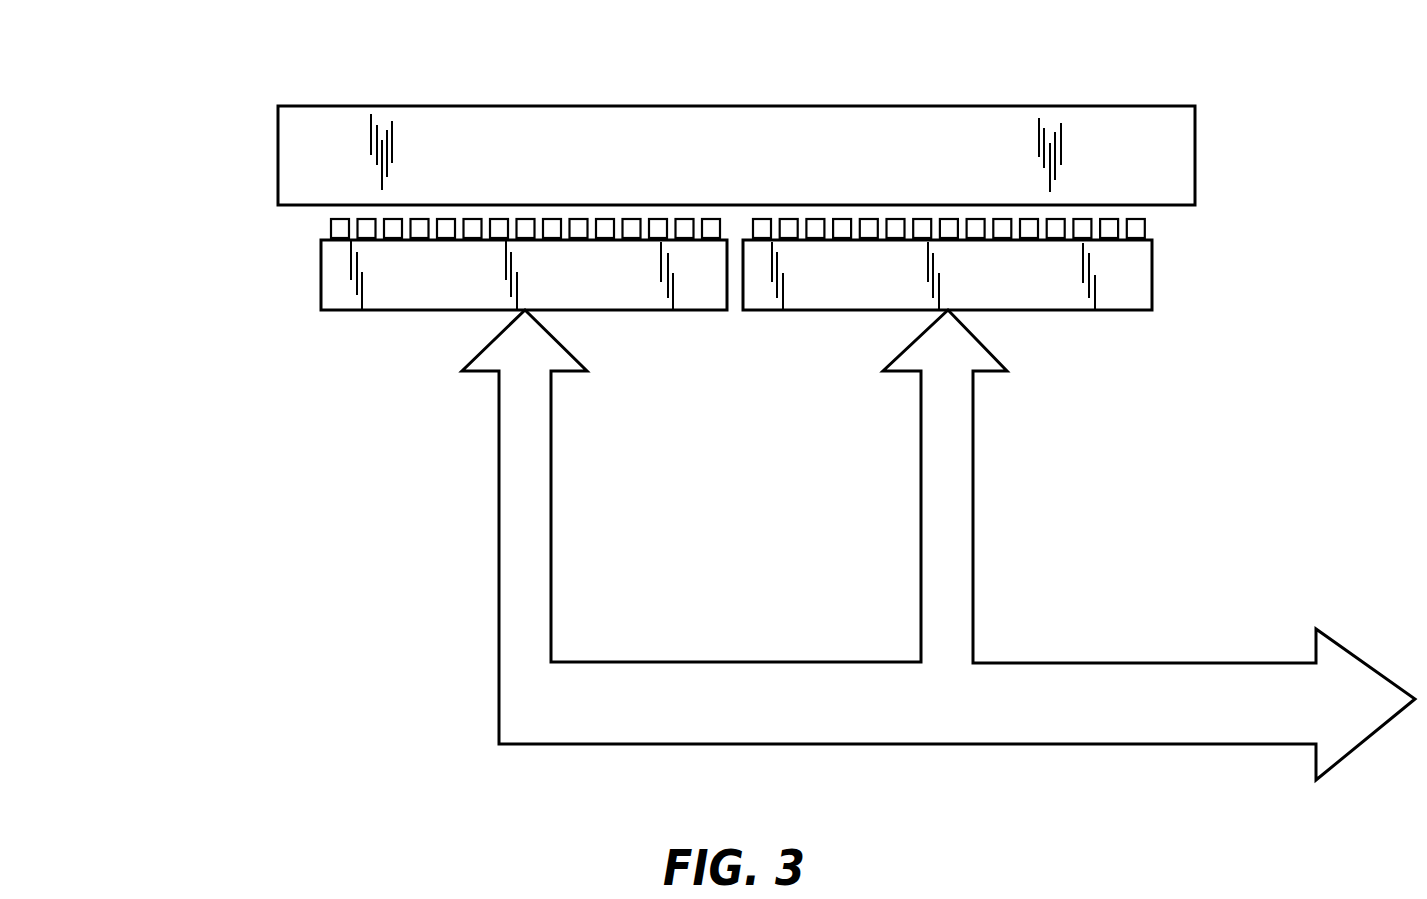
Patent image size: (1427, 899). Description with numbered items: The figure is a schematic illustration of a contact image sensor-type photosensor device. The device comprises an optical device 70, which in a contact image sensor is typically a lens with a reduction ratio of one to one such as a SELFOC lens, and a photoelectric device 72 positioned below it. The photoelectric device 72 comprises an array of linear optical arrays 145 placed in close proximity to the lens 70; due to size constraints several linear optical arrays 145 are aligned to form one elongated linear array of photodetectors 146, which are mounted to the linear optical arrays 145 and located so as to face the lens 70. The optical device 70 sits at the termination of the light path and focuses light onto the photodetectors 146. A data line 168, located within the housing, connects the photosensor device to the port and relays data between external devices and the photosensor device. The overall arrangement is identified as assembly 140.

The optical device 70 is at (737, 107).
The photoelectric device 72 is at (287, 276).
The bonding assembly 140 is at (262, 382).
The linear optical arrays 145 is at (1110, 312).
The photodetectors 146 is at (1143, 230).
The data line 168 is at (490, 552).